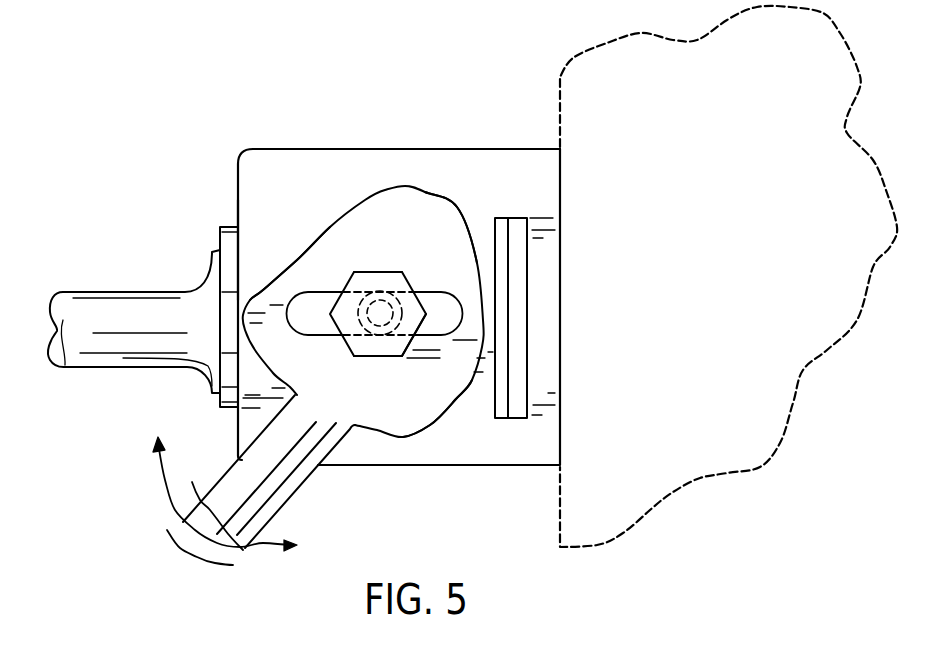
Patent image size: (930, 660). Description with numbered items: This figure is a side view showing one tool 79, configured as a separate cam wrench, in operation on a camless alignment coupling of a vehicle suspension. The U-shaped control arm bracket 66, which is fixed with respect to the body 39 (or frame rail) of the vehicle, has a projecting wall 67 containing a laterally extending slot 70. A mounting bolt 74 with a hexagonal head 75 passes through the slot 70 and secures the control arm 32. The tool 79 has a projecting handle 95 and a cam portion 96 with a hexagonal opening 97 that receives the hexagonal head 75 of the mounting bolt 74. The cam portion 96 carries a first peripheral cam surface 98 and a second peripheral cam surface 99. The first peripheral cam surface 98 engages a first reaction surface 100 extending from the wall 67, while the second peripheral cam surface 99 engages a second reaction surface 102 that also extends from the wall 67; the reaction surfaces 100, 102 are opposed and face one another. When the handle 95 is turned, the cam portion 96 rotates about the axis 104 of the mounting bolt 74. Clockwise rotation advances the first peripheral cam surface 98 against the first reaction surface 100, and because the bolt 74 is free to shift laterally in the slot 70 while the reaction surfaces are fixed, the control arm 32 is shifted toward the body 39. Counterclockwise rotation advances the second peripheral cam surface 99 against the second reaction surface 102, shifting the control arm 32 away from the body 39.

The control arm 32 is at (160, 303).
The body 39 is at (612, 60).
The U-shaped control arm bracket 66 is at (533, 150).
The projecting wall 67 is at (482, 162).
The laterally extending slot 70 is at (430, 293).
The mounting bolt 74 is at (348, 288).
The hexagonal head 75 is at (400, 352).
The tool 79 is at (391, 178).
The handle 95 is at (263, 498).
The cam portion 96 is at (448, 397).
The hexagonal opening 97 is at (387, 270).
The first peripheral cam surface 98 is at (312, 230).
The second peripheral cam surface 99 is at (458, 207).
The first reaction surface 100 is at (240, 245).
The second reaction surface 102 is at (493, 255).
The axis 104 is at (377, 322).